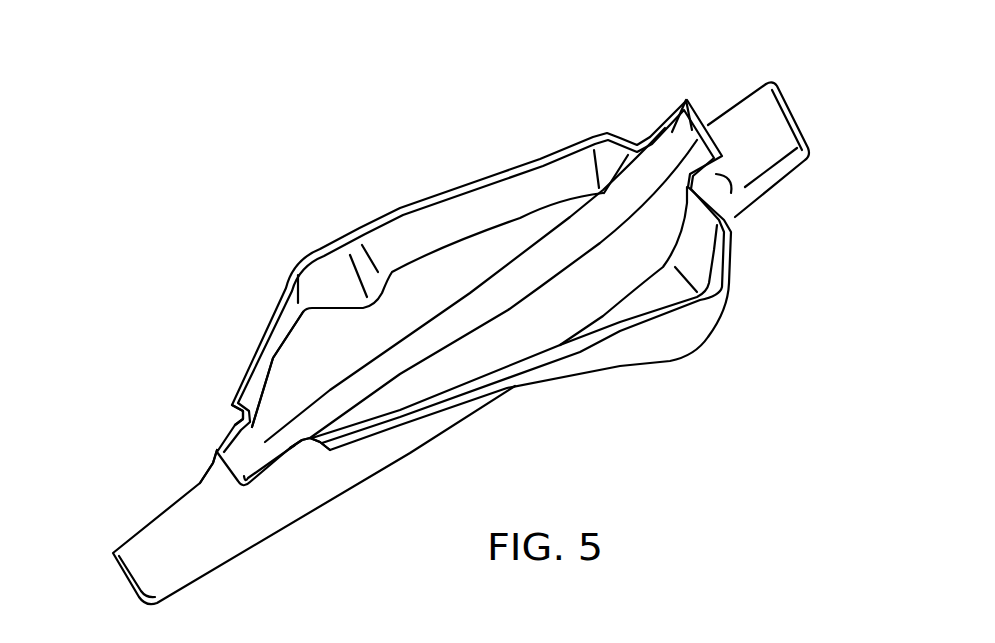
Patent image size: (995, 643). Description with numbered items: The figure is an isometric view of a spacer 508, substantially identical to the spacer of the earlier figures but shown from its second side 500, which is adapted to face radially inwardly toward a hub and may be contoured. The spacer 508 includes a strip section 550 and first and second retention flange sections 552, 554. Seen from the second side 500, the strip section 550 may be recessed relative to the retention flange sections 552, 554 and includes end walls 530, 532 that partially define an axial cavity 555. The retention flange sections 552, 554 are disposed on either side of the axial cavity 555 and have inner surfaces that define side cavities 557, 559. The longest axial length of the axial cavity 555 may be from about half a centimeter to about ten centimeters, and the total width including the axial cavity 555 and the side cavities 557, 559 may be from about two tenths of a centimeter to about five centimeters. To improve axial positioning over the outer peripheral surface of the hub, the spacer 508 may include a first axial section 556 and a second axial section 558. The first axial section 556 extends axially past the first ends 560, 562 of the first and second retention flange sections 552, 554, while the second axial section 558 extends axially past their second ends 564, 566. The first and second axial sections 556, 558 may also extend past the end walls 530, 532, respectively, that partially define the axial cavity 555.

The spacer 508 is at (228, 175).
The second side 500 is at (463, 247).
The side cavity 559 is at (332, 281).
The retention flange section 554 is at (297, 337).
The second end 566 is at (633, 142).
The axial cavity 555 is at (673, 143).
The end wall 532 is at (718, 138).
The second axial section 558 is at (768, 150).
The second end 564 is at (732, 181).
The retention flange section 552 is at (663, 302).
The strip section 550 is at (497, 350).
The side cavity 557 is at (610, 320).
The first end 562 is at (228, 416).
The end wall 530 is at (224, 463).
The first end 560 is at (333, 450).
The first axial section 556 is at (153, 558).